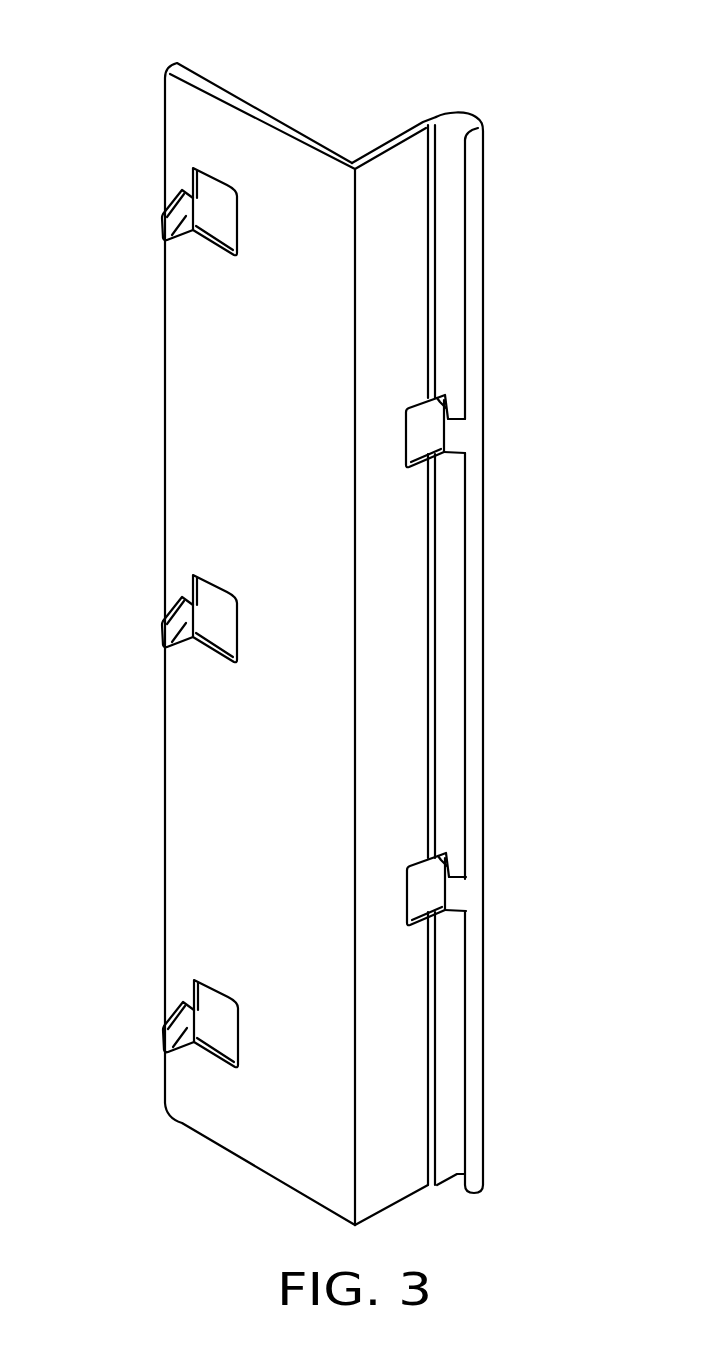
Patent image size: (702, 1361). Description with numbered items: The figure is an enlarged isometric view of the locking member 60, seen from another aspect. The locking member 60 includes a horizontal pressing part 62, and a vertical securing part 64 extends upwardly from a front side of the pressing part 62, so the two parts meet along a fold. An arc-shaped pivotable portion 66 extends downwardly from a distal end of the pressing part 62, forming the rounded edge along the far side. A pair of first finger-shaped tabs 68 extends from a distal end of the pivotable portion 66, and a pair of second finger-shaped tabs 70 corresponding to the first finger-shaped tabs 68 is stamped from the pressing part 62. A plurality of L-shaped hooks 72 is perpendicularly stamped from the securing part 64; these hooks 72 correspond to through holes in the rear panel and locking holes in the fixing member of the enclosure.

The locking member 60 is at (288, 40).
The pressing part 62 is at (402, 160).
The securing part 64 is at (210, 332).
The pivotable portion 66 is at (462, 118).
The first finger-shaped tabs 68 is at (457, 440).
The second finger-shaped tabs 70 is at (446, 413).
The L-shaped hooks 72 is at (165, 643).